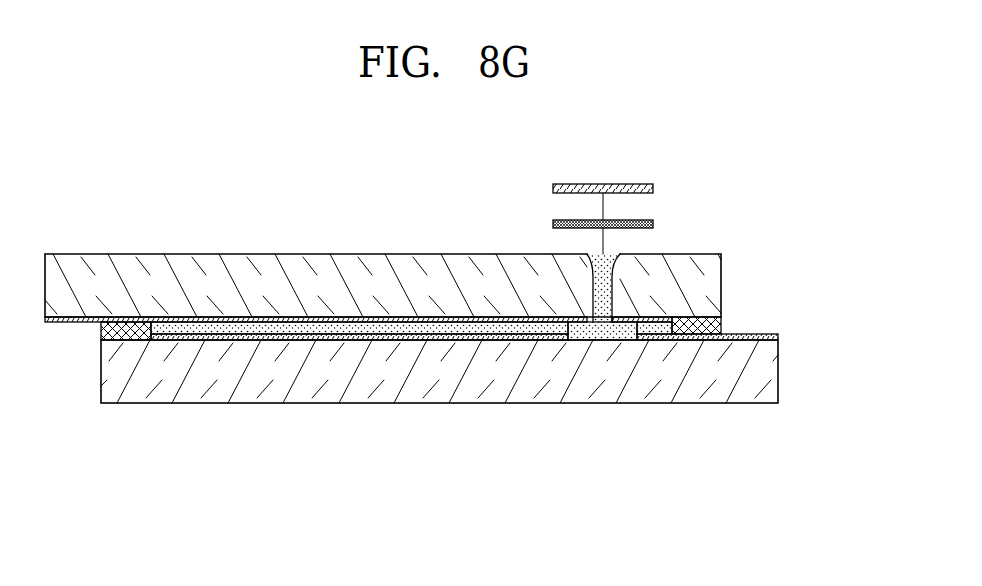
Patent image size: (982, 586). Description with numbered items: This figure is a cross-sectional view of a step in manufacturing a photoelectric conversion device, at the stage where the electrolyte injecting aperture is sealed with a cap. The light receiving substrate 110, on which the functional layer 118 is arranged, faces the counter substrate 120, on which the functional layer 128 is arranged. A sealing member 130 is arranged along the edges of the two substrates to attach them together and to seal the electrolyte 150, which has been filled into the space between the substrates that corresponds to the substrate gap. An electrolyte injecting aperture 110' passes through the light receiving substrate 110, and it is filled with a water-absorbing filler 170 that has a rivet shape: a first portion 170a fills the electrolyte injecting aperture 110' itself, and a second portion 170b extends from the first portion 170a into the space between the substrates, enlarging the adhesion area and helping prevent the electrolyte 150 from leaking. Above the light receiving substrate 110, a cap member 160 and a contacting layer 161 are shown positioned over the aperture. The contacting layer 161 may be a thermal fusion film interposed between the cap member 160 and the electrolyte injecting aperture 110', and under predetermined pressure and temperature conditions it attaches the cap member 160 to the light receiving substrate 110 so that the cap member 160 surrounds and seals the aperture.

The light receiving substrate 110 is at (422, 285).
The electrolyte injecting aperture 110' is at (559, 225).
The functional layer 118 is at (297, 317).
The counter substrate 120 is at (768, 370).
The functional layer 128 is at (298, 340).
The sealing member 130 is at (718, 323).
The electrolyte 150 is at (482, 328).
The cap member 160 is at (613, 184).
The contacting layer 161 is at (653, 224).
The water-absorbing filler 170 is at (570, 480).
The first portion 170a is at (596, 293).
The second portion 170b is at (620, 330).